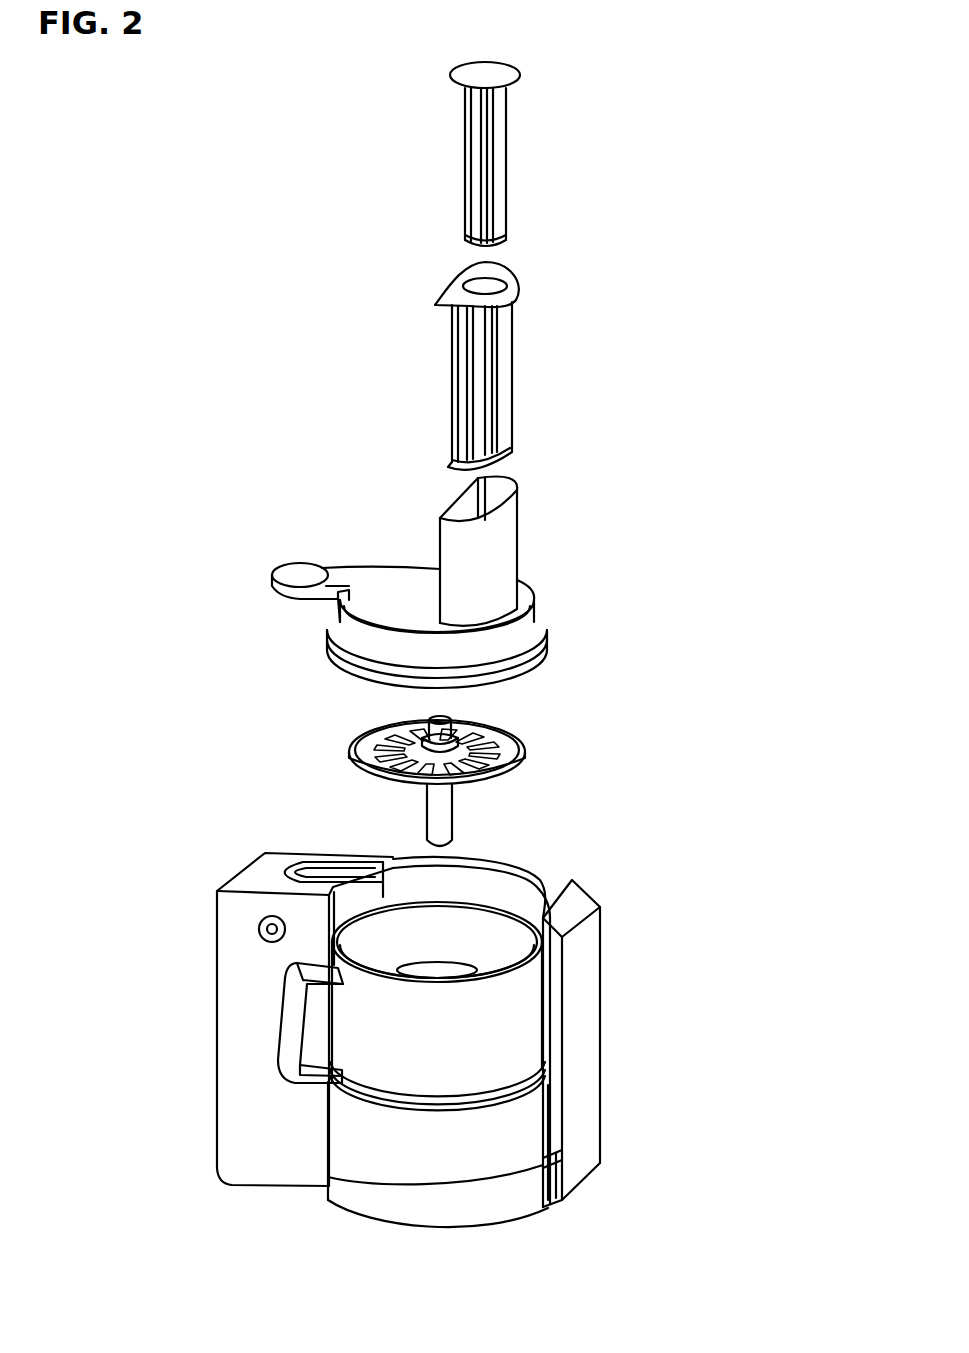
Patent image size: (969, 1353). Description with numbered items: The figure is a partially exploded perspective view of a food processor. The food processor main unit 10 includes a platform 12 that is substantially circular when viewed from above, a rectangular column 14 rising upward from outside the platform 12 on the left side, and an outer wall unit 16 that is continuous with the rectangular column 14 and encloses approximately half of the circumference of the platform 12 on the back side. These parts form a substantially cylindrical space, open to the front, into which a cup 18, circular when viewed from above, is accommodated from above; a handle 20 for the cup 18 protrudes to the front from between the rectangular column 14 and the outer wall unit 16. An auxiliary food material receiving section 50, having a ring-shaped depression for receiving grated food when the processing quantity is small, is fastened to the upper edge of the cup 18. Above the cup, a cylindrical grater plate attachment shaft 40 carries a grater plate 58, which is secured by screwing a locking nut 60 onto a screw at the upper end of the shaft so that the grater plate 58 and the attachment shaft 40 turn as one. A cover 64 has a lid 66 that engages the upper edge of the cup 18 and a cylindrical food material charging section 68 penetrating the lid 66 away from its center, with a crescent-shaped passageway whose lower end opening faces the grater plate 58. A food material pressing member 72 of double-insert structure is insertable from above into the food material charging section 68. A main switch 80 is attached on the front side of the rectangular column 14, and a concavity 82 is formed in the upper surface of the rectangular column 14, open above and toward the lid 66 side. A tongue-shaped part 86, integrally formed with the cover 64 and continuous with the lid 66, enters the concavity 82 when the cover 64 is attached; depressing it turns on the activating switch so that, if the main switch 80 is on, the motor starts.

The food processor main unit 10 is at (208, 1137).
The platform 12 is at (430, 1152).
The rectangular column 14 is at (217, 1047).
The outer wall unit 16 is at (600, 968).
The cup 18 is at (532, 971).
The handle 20 is at (298, 1062).
The grater plate attachment shaft 40 is at (452, 817).
The auxiliary food material receiving section 50 is at (507, 944).
The grater plate 58 is at (527, 750).
The locking nut 60 is at (463, 714).
The cover 64 is at (560, 638).
The lid 66 is at (522, 592).
The food material charging section 68 is at (518, 532).
The food material pressing member 72 is at (507, 205).
The main switch 80 is at (262, 933).
The concavity 82 is at (338, 878).
The tongue-shaped part 86 is at (300, 575).